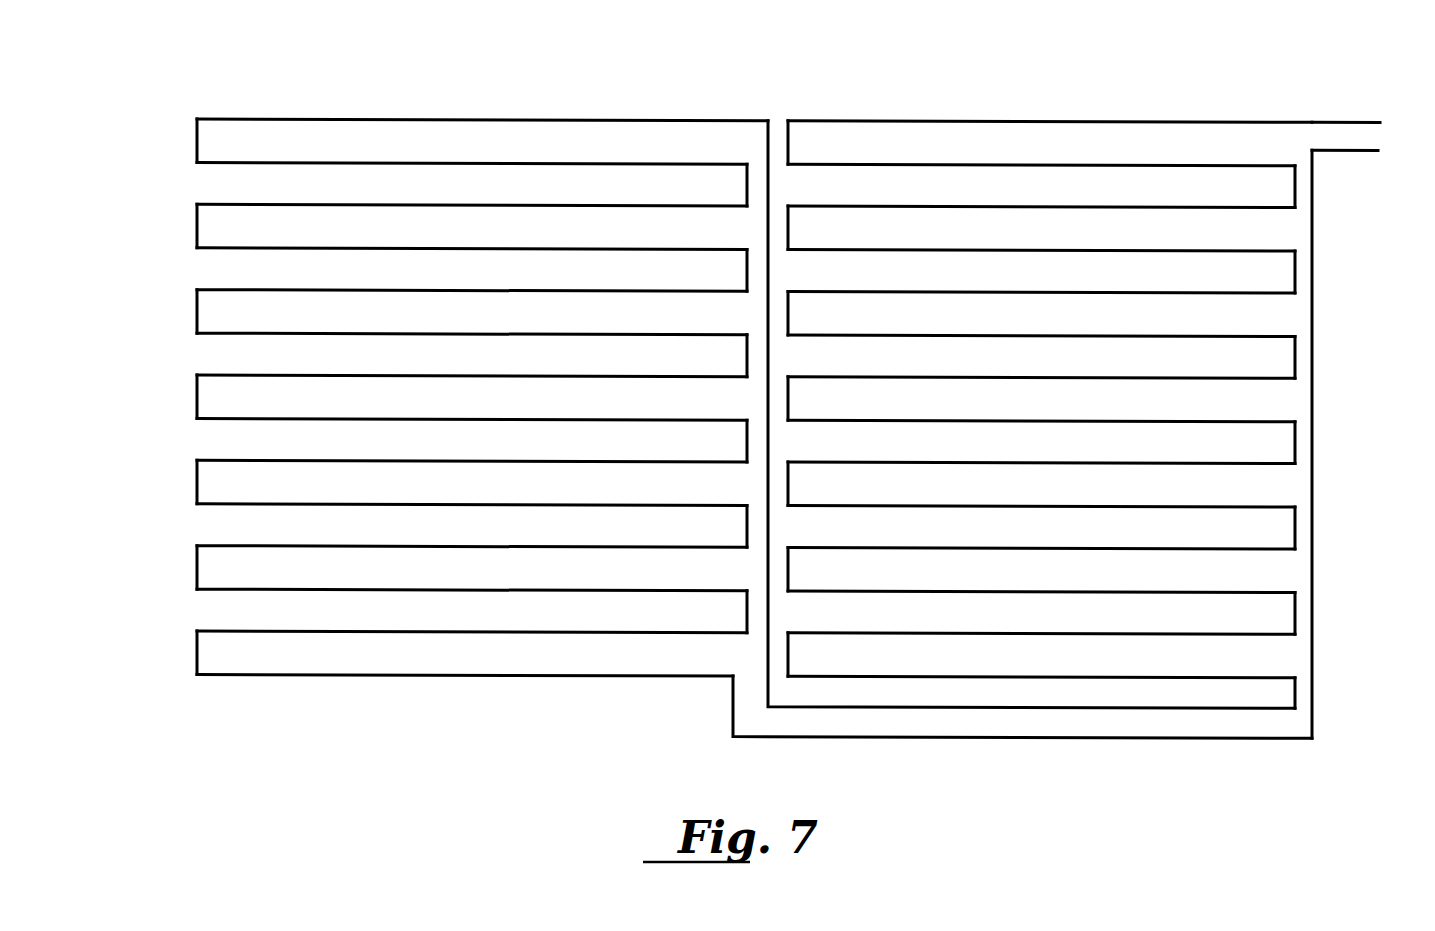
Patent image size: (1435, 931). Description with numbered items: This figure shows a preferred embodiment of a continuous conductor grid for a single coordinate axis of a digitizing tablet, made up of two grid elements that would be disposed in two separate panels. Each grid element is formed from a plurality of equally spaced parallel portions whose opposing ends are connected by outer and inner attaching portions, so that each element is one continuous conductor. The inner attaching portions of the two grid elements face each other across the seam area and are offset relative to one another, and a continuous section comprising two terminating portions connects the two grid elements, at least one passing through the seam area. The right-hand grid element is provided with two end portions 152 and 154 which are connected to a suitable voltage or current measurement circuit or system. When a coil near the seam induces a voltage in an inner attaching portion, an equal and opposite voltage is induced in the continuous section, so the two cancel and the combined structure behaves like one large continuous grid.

The end portion 152 is at (1345, 121).
The end portion 154 is at (1365, 152).